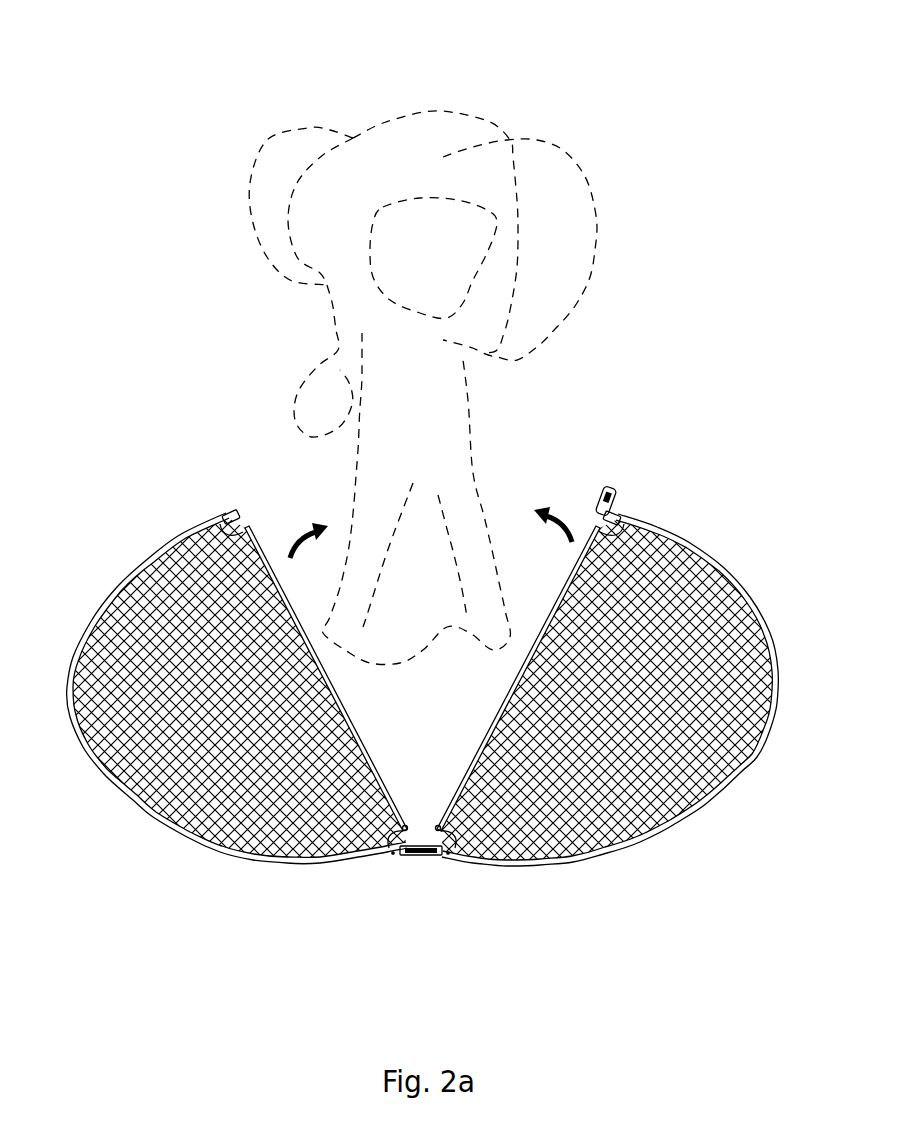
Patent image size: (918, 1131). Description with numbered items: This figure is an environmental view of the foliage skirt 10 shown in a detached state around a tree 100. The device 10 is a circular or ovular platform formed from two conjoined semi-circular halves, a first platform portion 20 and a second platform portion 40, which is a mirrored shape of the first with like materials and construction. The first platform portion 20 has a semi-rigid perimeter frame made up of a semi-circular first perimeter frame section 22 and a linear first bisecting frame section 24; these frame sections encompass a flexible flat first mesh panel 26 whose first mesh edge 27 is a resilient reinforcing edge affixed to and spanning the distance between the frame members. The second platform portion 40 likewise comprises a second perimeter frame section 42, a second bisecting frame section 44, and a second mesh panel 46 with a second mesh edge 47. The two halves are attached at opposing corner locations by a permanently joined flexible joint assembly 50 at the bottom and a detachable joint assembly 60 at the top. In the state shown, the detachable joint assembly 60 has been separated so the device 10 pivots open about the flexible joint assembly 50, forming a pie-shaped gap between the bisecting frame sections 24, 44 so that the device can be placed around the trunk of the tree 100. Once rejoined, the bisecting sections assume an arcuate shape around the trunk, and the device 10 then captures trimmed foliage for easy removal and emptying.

The foliage skirt 10 is at (108, 92).
The first platform portion 20 is at (219, 694).
The first perimeter frame section 22 is at (227, 850).
The first bisecting frame section 24 is at (375, 770).
The first mesh panel 26 is at (208, 681).
The first mesh edge 27 is at (230, 527).
The second platform portion 40 is at (624, 669).
The second perimeter frame section 42 is at (763, 633).
The second bisecting frame section 44 is at (487, 733).
The second mesh panel 46 is at (690, 720).
The second mesh edge 47 is at (610, 528).
The flexible joint assembly 50 is at (428, 856).
The detachable joint assembly 60 is at (608, 490).
The tree 100 is at (596, 254).